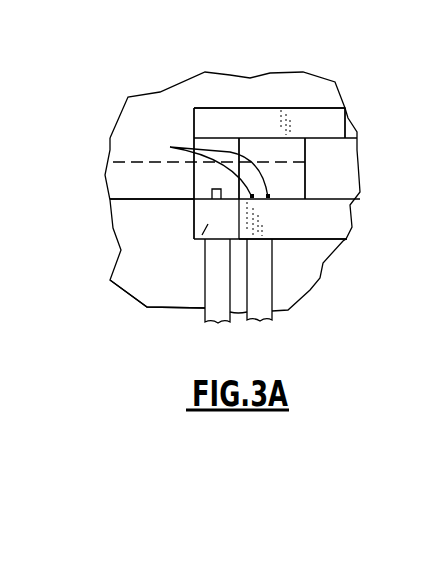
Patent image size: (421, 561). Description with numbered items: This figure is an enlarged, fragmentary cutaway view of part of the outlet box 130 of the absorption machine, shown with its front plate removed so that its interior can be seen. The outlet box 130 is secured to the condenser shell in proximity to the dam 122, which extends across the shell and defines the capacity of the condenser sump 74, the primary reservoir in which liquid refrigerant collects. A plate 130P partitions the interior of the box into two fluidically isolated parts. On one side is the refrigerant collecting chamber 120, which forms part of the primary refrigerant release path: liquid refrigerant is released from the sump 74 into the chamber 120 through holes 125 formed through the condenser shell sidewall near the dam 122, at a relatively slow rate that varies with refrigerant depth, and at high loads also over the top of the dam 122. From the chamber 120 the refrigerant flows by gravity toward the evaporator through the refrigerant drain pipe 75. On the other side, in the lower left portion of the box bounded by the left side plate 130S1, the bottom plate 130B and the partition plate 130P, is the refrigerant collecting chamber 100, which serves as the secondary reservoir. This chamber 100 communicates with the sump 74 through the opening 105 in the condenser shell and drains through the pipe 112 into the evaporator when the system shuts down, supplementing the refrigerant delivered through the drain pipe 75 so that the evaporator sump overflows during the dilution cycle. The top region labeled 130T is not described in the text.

The condenser sump 74 is at (110, 174).
The refrigerant drain pipe 75 is at (262, 293).
The refrigerant collecting chamber 100 is at (199, 245).
The opening 105 is at (216, 189).
The drain pipe 112 is at (213, 292).
The refrigerant collecting chamber 120 is at (332, 223).
The dam 122 is at (306, 179).
The holes 125 is at (196, 163).
The outlet box 130 is at (243, 102).
The bottom plate 130B is at (297, 240).
The partition plate 130P is at (240, 147).
The left side plate 130S1 is at (193, 215).
The top of structure 130T is at (307, 122).